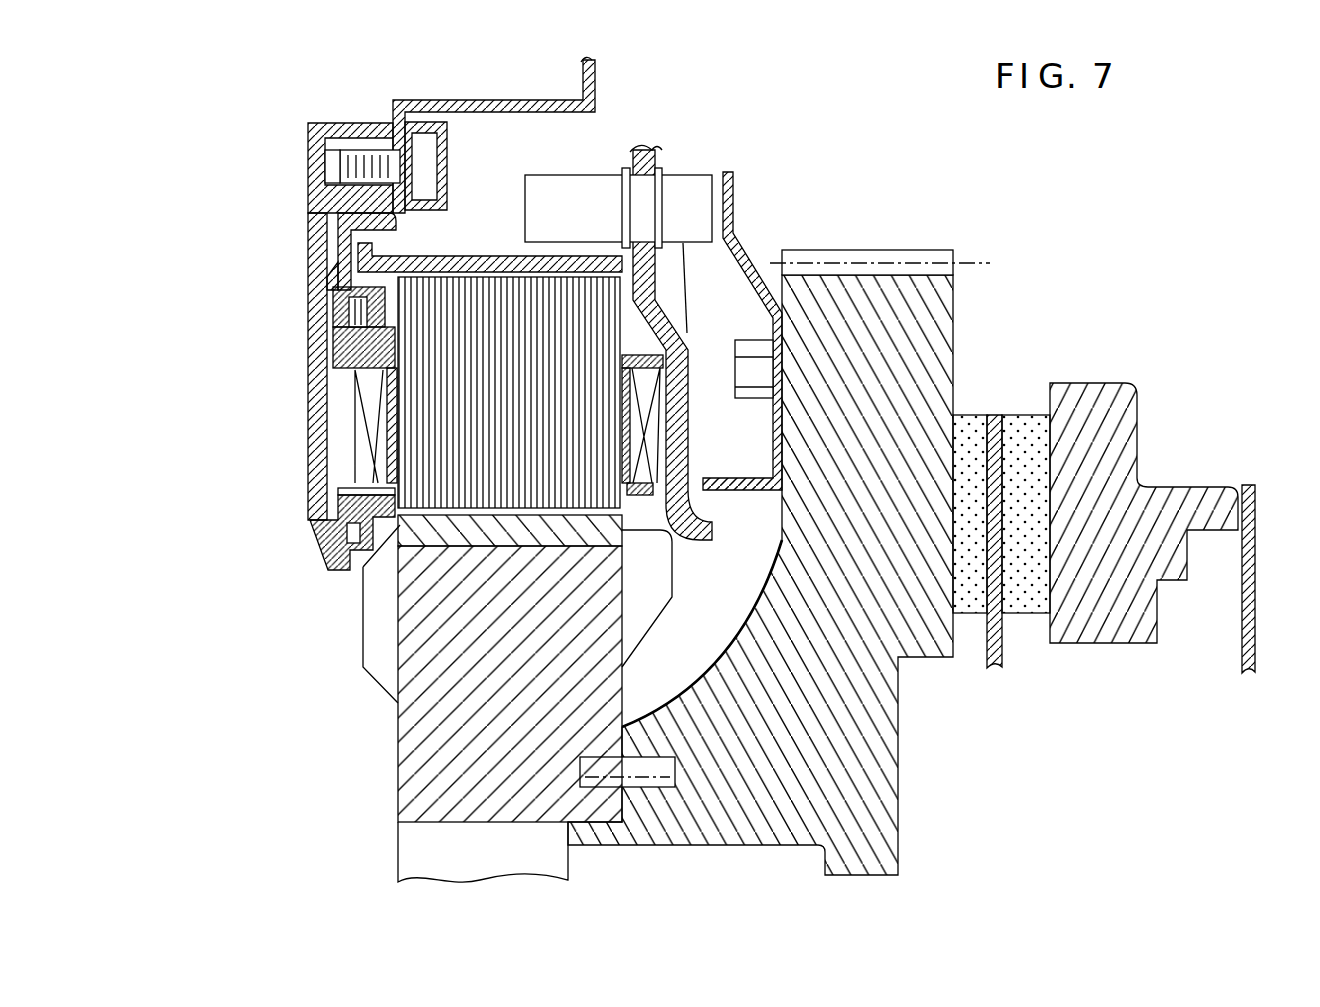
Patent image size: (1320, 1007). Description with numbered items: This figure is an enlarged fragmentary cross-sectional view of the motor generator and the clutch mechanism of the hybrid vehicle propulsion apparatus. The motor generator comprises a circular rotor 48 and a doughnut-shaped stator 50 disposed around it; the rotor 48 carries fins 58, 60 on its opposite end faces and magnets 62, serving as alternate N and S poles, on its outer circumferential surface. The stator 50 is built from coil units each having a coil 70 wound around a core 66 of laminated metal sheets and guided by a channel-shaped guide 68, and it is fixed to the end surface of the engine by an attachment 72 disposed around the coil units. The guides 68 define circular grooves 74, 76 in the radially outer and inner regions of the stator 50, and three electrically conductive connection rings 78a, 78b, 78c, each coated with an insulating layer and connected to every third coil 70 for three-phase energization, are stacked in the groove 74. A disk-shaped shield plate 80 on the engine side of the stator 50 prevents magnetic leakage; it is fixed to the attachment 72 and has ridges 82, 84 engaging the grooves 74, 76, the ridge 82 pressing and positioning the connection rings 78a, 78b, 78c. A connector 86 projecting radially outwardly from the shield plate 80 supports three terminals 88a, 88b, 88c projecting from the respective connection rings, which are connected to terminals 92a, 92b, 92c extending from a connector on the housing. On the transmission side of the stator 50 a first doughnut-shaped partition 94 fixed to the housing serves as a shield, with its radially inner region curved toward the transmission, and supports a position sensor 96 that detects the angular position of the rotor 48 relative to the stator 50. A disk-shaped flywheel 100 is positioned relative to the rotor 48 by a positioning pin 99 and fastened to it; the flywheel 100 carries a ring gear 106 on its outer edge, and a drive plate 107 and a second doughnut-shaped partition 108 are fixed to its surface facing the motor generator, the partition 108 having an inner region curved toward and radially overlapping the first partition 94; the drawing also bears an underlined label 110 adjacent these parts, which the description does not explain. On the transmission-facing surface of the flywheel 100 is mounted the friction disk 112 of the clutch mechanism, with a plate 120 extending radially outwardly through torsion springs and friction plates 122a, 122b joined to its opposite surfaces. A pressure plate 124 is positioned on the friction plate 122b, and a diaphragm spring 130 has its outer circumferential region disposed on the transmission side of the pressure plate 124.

The rotor 48 is at (410, 712).
The stator 50 is at (500, 248).
The fin 58 is at (365, 657).
The fin 60 is at (655, 607).
The magnet 62 is at (458, 527).
The core 66 is at (483, 290).
The guide 68 is at (640, 495).
The coil 70 is at (320, 420).
The attachment 72 is at (415, 258).
The groove 74 is at (333, 262).
The groove 76 is at (330, 570).
The connection ring 78a is at (338, 300).
The connection ring 78b is at (335, 340).
The connection ring 78c is at (345, 352).
The shield plate 80 is at (320, 395).
The ridge 82 is at (345, 315).
The ridge 84 is at (325, 533).
The connector 86 is at (358, 123).
The terminal 88a is at (338, 170).
The terminal 88b is at (426, 166).
The terminal 88c is at (332, 166).
The terminal 92a is at (598, 84).
The terminal 92b is at (494, 106).
The terminal 92c is at (588, 84).
The first partition 94 is at (670, 325).
The position sensor 96 is at (570, 183).
The positioning pin 99 is at (640, 790).
The flywheel 100 is at (852, 290).
The ring gear 106 is at (930, 252).
The drive plate 107 is at (748, 262).
The second partition 108 is at (743, 490).
The bracket assembly 110 is at (805, 182).
The friction disk 112 is at (1165, 465).
The plate 120 is at (1002, 653).
The friction plate 122a is at (965, 415).
The friction plate 122b is at (1023, 415).
The pressure plate 124 is at (1135, 388).
The diaphragm spring 130 is at (1240, 617).